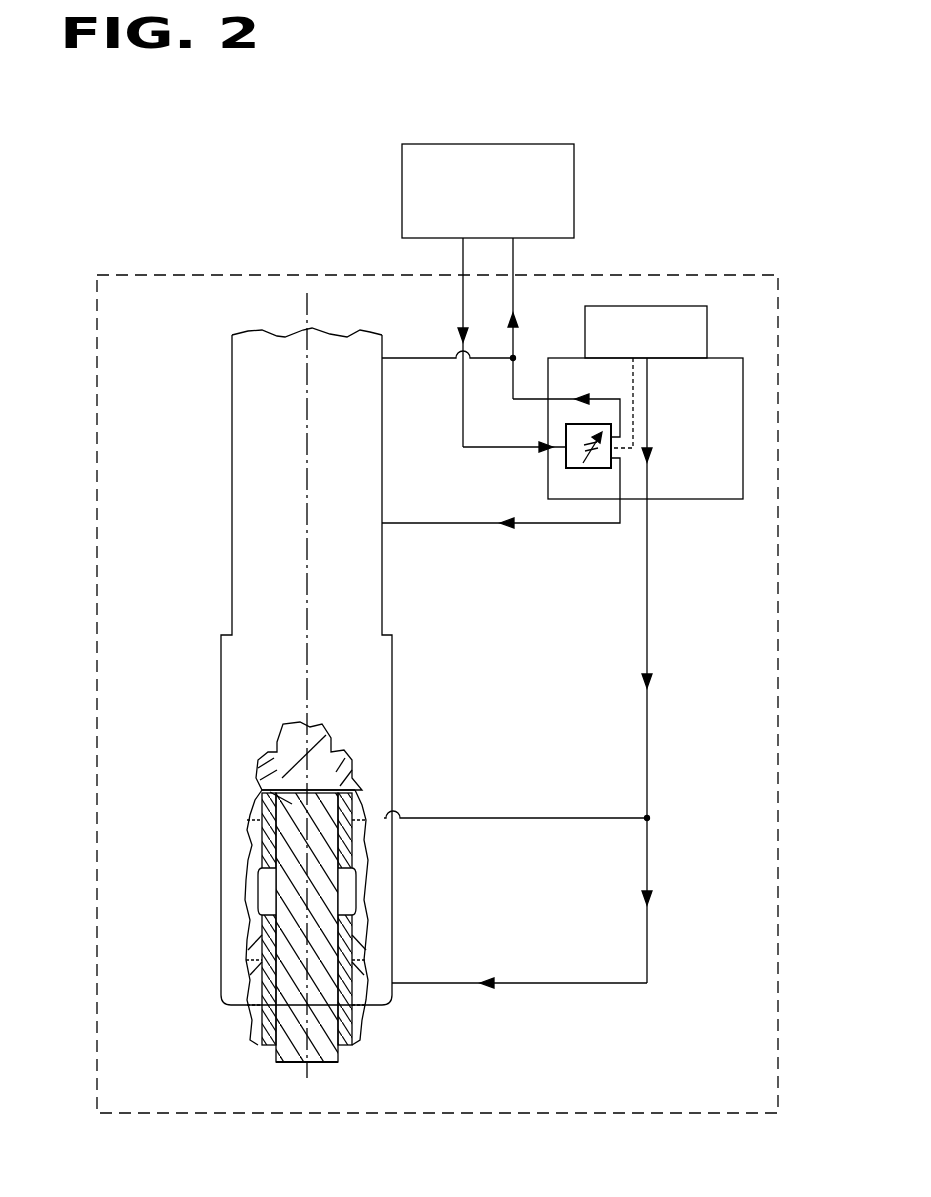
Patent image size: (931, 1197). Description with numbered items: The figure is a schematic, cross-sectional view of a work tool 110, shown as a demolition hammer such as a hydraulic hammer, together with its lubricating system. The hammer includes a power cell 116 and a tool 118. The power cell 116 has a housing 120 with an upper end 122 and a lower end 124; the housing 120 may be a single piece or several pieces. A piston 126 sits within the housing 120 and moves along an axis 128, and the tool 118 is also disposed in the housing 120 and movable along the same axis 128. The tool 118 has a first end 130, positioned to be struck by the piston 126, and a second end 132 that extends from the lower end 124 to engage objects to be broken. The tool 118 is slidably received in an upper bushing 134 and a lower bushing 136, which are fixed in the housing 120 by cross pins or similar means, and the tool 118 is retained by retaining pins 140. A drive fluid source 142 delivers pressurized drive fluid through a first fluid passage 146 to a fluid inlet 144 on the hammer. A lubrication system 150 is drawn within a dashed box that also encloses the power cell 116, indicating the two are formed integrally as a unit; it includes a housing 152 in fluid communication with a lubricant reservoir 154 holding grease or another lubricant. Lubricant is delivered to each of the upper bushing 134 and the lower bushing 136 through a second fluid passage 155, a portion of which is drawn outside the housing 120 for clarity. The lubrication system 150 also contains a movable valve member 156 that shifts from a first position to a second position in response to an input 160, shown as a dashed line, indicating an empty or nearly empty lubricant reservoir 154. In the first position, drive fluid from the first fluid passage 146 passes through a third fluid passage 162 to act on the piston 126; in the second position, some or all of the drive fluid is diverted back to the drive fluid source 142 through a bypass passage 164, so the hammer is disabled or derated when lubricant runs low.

The work tool 110 is at (172, 167).
The power cell 116 is at (196, 465).
The tool 118 is at (284, 1052).
The housing 120 is at (258, 840).
The upper end 122 is at (218, 341).
The lower end 124 is at (196, 961).
The piston 126 is at (290, 738).
The axis 128 is at (305, 312).
The first end 130 is at (280, 790).
The second end 132 is at (283, 1062).
The upper bushing 134 is at (265, 847).
The lower bushing 136 is at (265, 950).
The retaining pins 140 is at (358, 888).
The drive fluid source 142 is at (488, 191).
The fluid inlet 144 is at (462, 282).
The first fluid passage 146 is at (463, 400).
The lubrication system 150 is at (729, 325).
The housing 152 is at (645, 428).
The lubricant reservoir 154 is at (646, 332).
The second fluid passage 155 is at (647, 580).
The movable valve member 156 is at (577, 468).
The input 160 is at (633, 369).
The third fluid passage 162 is at (535, 523).
The bypass passage 164 is at (513, 303).